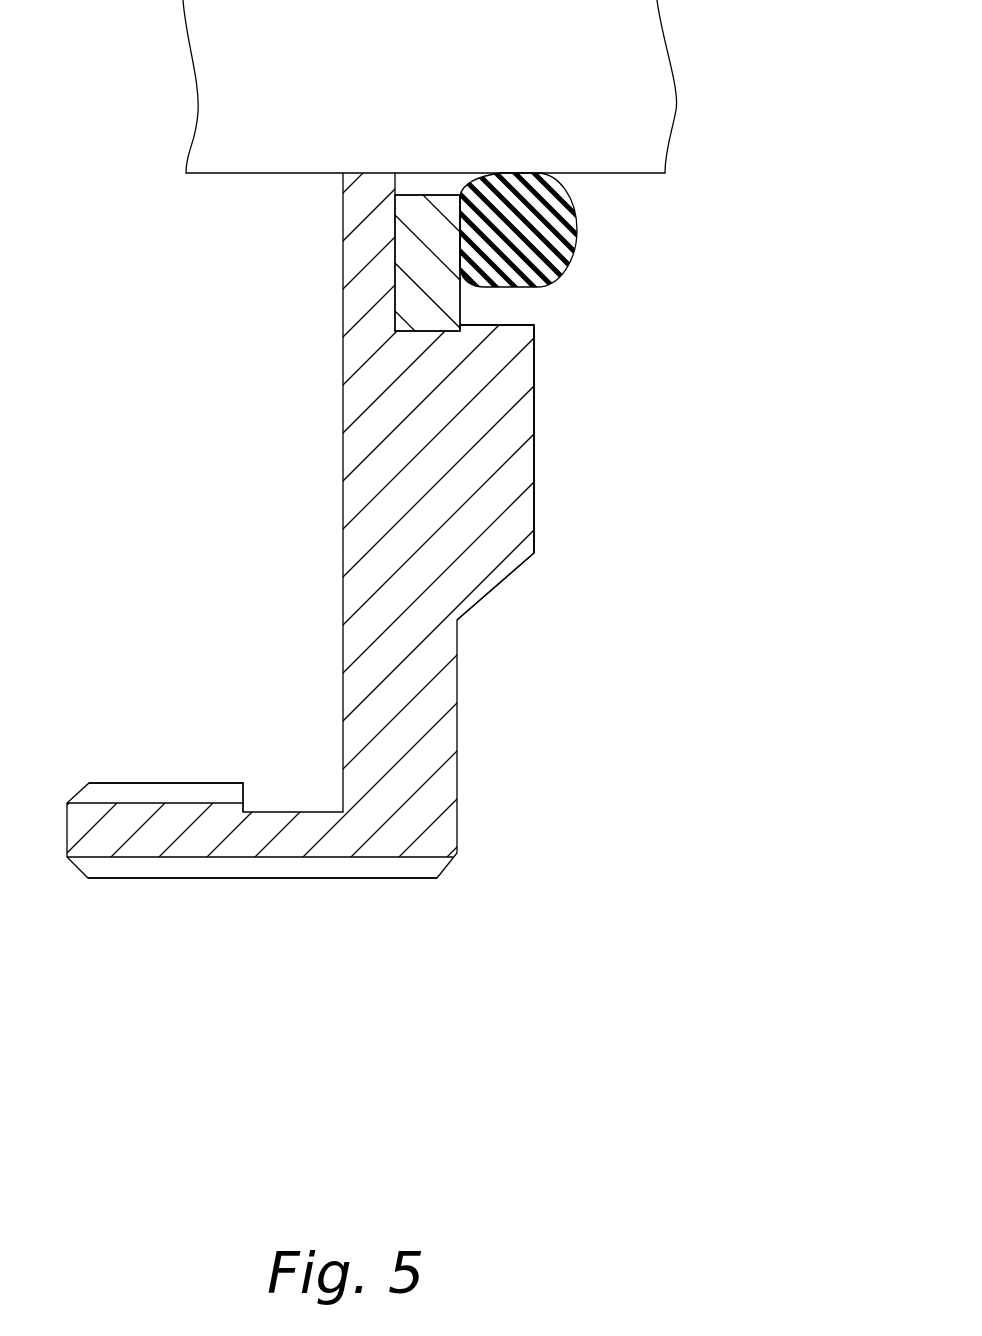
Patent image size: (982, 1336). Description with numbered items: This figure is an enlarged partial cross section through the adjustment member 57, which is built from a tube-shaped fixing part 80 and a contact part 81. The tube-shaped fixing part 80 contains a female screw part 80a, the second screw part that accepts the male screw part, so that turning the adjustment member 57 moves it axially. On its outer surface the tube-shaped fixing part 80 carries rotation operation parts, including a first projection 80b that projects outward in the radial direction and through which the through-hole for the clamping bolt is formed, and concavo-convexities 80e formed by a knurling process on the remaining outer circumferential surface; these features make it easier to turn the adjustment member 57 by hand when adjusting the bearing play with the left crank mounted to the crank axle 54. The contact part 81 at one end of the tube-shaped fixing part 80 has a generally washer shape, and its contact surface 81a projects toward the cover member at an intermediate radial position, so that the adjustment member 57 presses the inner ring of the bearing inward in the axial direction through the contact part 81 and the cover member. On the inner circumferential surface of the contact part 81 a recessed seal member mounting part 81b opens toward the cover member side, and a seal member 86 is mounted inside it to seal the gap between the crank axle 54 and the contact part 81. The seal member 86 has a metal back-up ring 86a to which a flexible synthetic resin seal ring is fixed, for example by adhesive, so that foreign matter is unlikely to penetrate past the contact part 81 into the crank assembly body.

The crank axle 54 is at (637, 165).
The adjustment member 57 is at (522, 705).
The tube-shaped fixing part 80 is at (333, 848).
The female screw part 80a is at (178, 783).
The first projection 80b is at (472, 235).
The concavo-convexities 80e is at (390, 873).
The contact part 81 is at (460, 617).
The contact surface 81a is at (535, 480).
The seal member mounting part 81b is at (535, 323).
The seal member 86 is at (570, 272).
The back-up ring 86a is at (418, 304).